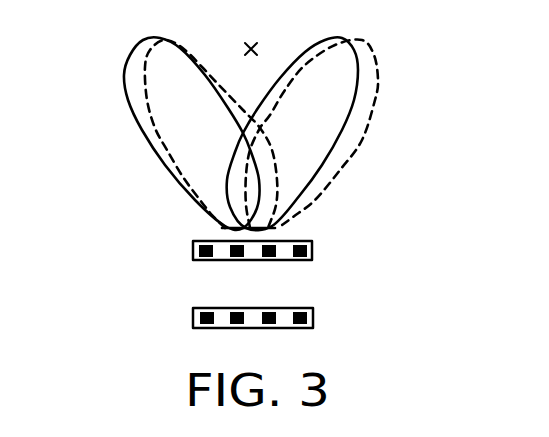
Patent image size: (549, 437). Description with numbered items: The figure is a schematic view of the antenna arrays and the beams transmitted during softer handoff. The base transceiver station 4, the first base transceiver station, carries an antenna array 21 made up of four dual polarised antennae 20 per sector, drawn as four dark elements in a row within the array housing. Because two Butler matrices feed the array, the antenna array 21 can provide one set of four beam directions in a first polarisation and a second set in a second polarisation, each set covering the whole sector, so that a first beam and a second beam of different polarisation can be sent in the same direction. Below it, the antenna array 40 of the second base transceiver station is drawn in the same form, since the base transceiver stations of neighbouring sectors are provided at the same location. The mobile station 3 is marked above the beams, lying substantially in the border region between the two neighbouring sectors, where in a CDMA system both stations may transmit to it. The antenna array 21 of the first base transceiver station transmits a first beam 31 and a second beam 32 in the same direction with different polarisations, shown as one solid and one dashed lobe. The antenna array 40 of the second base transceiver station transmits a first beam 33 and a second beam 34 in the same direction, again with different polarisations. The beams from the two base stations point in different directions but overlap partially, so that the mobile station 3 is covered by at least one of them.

The mobile station 3 is at (258, 48).
The first beam 31 is at (124, 71).
The second beam 32 is at (162, 149).
The first beam 33 is at (337, 144).
The second beam 34 is at (379, 71).
The base transceiver station 4 is at (242, 269).
The antenna array 21 is at (227, 270).
The dual polarised antennae 20 is at (210, 261).
The antenna array 40 is at (193, 315).